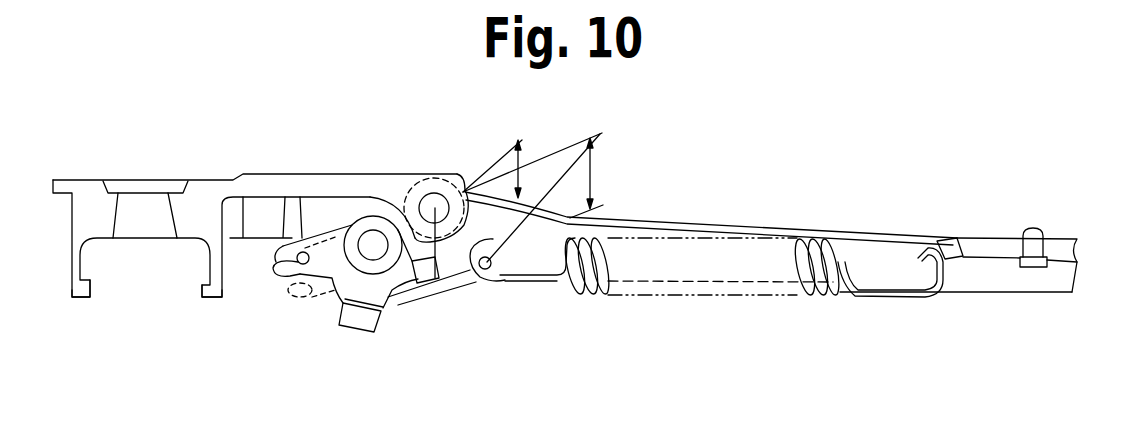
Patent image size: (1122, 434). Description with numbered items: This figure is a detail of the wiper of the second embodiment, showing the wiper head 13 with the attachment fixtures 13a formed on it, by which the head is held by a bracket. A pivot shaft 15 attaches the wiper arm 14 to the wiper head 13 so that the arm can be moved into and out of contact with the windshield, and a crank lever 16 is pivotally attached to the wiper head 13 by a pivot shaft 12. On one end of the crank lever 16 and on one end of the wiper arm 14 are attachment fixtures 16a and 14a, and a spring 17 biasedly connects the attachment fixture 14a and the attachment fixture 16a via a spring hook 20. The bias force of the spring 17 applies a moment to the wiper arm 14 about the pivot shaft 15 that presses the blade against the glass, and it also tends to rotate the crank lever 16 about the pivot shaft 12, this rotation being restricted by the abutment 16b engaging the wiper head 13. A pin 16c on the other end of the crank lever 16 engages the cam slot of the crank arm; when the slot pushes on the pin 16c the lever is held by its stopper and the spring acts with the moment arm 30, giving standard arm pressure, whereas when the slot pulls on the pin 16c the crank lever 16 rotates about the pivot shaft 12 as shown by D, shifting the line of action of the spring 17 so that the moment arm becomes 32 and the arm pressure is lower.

The pivot shaft 12 is at (373, 232).
The wiper head 13 is at (338, 184).
The attachment fixtures 13a is at (80, 298).
The wiper arm 14 is at (773, 224).
The attachment fixture 14a is at (993, 247).
The pivot shaft 15 is at (433, 204).
The crank lever 16 is at (316, 228).
The attachment fixture 16a is at (282, 242).
The abutment 16b is at (430, 291).
The pin 16c is at (377, 324).
The spring 17 is at (890, 292).
The spring hook 20 is at (413, 293).
The moment arm 30 is at (600, 176).
The moment arm 32 is at (527, 158).
The rotation of crank lever D is at (247, 280).